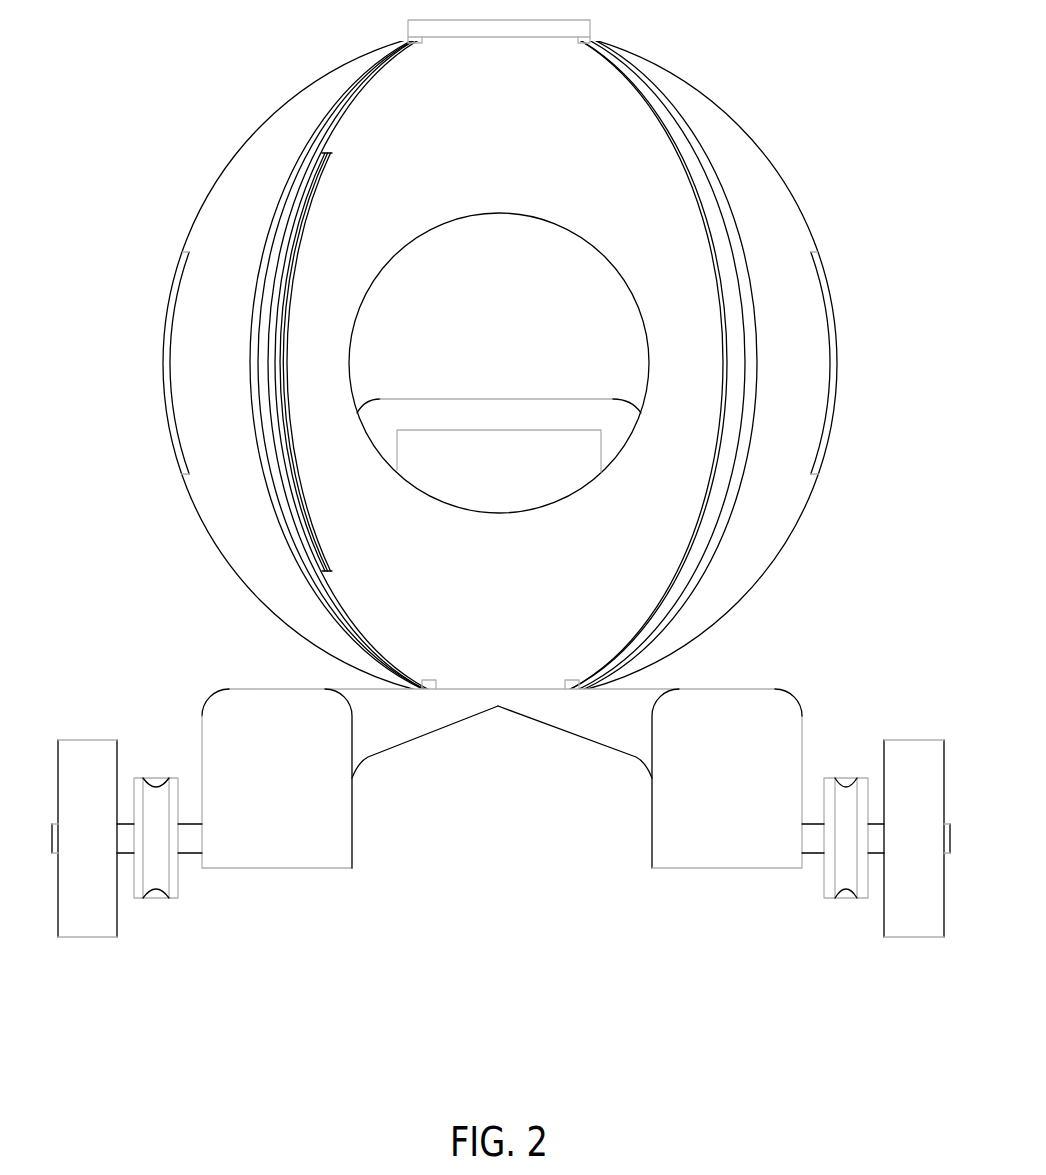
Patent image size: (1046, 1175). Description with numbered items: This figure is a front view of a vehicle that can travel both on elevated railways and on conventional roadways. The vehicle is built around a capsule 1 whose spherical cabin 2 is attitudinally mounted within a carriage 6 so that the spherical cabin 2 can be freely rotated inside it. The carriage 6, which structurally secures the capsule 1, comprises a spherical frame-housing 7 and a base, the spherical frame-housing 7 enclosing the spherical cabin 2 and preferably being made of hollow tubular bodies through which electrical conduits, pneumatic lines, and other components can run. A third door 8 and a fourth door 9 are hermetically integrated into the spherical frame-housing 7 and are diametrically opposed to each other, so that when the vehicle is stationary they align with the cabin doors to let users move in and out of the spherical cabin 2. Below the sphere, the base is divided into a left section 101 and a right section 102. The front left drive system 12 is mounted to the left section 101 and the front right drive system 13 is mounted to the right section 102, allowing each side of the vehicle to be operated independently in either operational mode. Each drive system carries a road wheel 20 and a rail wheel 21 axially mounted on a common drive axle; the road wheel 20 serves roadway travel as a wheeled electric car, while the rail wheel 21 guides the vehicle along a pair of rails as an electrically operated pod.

The capsule 1 is at (500, 357).
The spherical cabin 2 is at (347, 120).
The carriage 6 is at (786, 222).
The spherical frame-housing 7 is at (722, 118).
The third door 8 is at (172, 438).
The fourth door 9 is at (827, 437).
The left section 101 is at (803, 716).
The right section 102 is at (204, 712).
The front left drive system 12 is at (841, 997).
The front right drive system 13 is at (161, 970).
The road wheel 20 is at (83, 928).
The rail wheel 21 is at (176, 896).